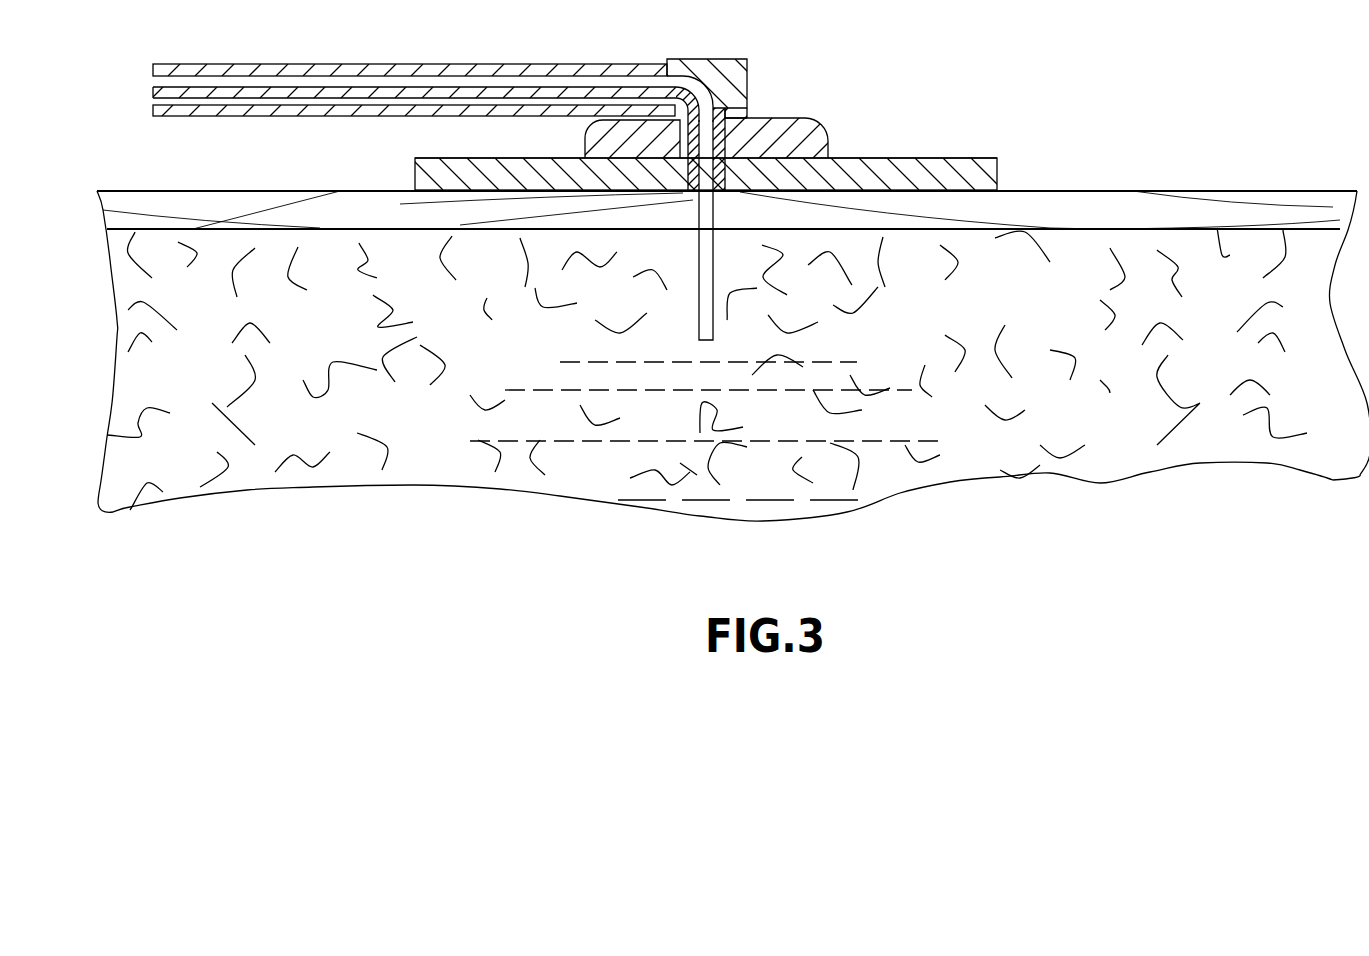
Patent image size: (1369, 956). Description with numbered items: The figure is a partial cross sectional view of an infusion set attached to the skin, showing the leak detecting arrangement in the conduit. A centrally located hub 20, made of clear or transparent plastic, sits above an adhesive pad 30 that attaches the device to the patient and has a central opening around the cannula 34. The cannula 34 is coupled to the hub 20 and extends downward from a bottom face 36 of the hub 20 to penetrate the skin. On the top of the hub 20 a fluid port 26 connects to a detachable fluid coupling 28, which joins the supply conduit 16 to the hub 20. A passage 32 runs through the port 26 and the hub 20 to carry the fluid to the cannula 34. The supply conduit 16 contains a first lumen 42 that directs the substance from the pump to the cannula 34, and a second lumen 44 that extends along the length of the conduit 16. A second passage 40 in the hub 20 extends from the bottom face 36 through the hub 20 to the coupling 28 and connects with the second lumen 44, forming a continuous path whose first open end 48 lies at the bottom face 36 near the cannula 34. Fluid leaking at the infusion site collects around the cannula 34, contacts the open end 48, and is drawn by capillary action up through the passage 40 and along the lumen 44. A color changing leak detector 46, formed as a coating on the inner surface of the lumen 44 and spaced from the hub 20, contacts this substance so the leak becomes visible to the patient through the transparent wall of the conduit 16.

The supply conduit 16 is at (413, 91).
The first lumen 42 is at (437, 83).
The leak detector 46 is at (267, 98).
The second lumen 44 is at (365, 104).
The fluid coupling 28 is at (707, 59).
The fluid port 26 is at (748, 108).
The passage 32 is at (705, 137).
The cannula 34 is at (713, 323).
The first open end 48 is at (683, 193).
The second passage 40 is at (690, 135).
The hub 20 is at (817, 121).
The pad 30 is at (990, 158).
The bottom face 36 is at (857, 158).